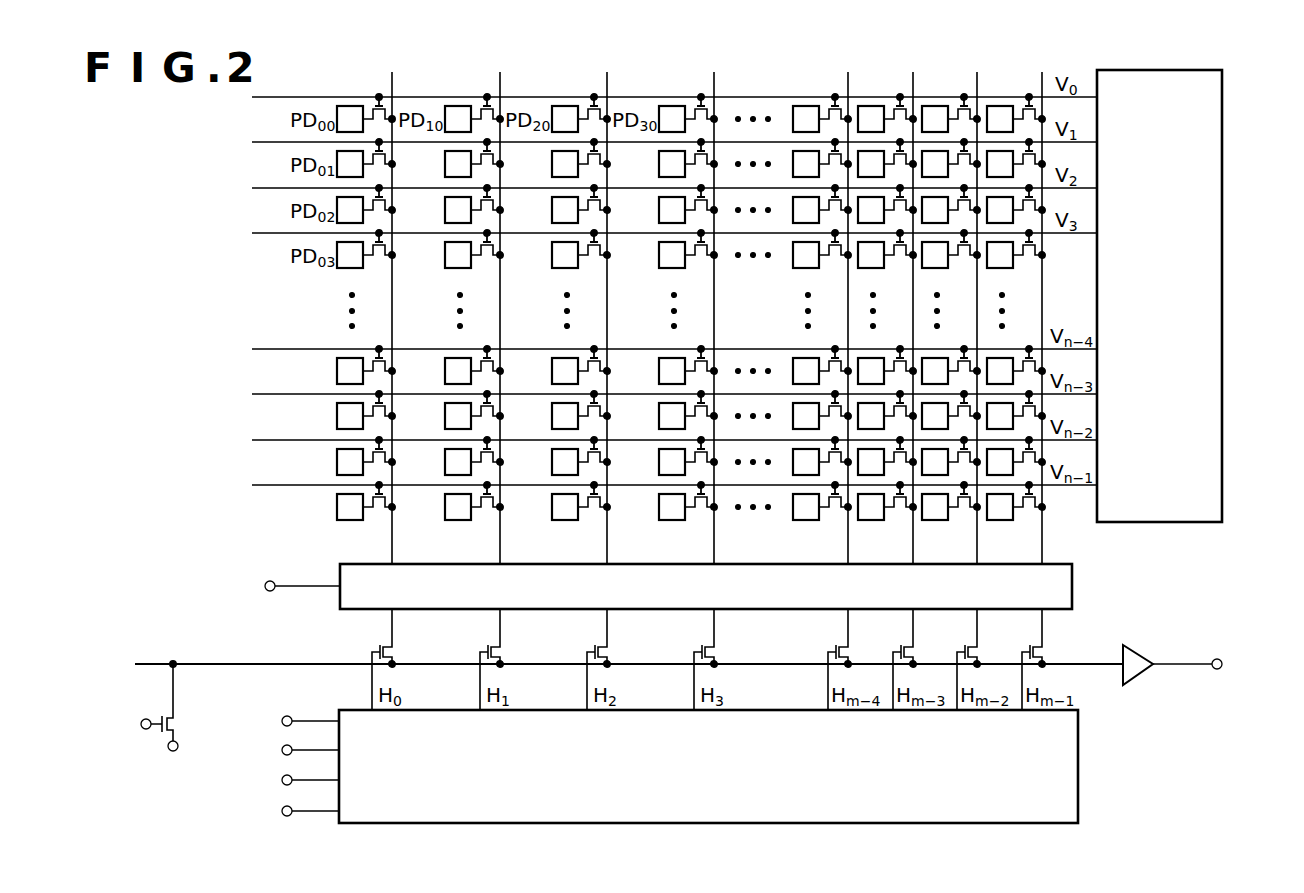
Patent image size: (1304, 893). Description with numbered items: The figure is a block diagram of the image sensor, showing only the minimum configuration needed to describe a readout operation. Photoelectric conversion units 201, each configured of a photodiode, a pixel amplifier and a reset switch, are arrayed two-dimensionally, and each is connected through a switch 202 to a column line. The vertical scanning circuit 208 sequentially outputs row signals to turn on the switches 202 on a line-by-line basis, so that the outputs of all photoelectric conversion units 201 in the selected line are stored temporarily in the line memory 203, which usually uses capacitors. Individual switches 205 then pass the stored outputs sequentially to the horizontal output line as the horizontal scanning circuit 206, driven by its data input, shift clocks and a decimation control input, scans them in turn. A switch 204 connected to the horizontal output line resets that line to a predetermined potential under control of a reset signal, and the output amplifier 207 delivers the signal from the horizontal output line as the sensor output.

The photoelectric conversion unit 201 is at (355, 110).
The switch 202 is at (372, 104).
The line memory 203 is at (340, 563).
The switch 204 is at (164, 716).
The individual switches 205 is at (378, 647).
The horizontal scanning circuit 206 is at (1080, 745).
The output amplifier 207 is at (1135, 645).
The vertical scanning circuit 208 is at (1185, 523).